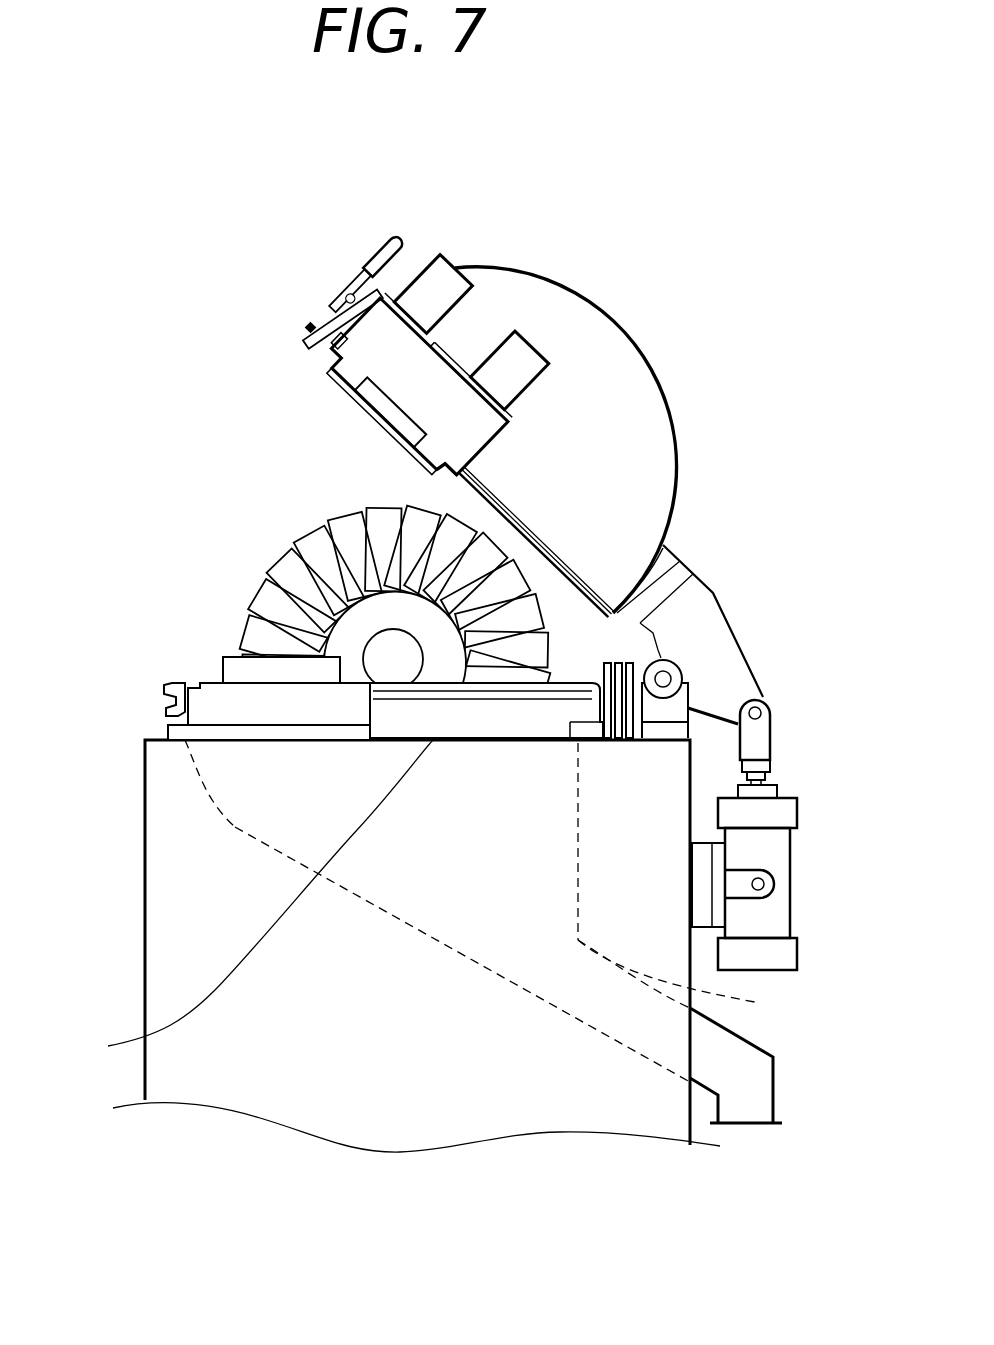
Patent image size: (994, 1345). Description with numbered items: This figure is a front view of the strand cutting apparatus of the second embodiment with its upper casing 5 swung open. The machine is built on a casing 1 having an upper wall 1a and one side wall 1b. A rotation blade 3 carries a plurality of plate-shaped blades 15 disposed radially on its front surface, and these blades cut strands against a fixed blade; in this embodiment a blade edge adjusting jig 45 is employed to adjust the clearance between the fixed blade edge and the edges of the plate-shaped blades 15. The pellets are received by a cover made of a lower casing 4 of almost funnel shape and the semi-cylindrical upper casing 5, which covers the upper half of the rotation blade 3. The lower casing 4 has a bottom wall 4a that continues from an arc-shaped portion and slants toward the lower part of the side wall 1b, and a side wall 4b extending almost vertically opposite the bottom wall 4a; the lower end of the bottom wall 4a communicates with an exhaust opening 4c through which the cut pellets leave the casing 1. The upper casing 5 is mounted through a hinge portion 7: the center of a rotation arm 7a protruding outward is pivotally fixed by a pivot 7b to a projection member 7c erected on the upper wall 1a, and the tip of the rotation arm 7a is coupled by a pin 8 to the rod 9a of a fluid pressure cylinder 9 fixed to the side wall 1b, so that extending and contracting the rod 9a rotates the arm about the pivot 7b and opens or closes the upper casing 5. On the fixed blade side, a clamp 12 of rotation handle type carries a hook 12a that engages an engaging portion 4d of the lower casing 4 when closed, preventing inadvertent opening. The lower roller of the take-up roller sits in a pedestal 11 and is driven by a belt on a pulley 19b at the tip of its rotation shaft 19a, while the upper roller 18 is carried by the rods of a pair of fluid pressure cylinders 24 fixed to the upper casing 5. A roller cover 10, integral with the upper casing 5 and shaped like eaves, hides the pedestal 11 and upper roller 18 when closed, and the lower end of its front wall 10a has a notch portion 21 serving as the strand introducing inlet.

The casing 1 is at (177, 897).
The upper wall 1a is at (277, 891).
The one side wall 1b is at (690, 1053).
The rotation blade 3 is at (366, 585).
The lower casing 4 is at (217, 793).
The bottom wall 4a is at (437, 937).
The side wall 4b is at (687, 850).
The exhaust opening 4c is at (755, 1125).
The engaging portion 4d is at (165, 690).
The upper casing 5 is at (590, 325).
The hinge portion 7 is at (735, 620).
The rotation arm 7a is at (713, 593).
The pivot 7b is at (665, 672).
The projection member 7c is at (738, 668).
The pin 8 is at (768, 705).
The fluid pressure cylinder 9 is at (768, 862).
The rod 9a is at (768, 775).
The roller cover 10 is at (325, 356).
The front wall 10a is at (438, 447).
The pedestal 11 is at (175, 720).
The clamp 12 is at (330, 322).
The hook 12a is at (335, 318).
The plate-shaped blades 15 is at (330, 520).
The upper roller 18 is at (340, 382).
The rotation shaft 19a is at (574, 687).
The pulley 19b is at (680, 780).
The notch portion 21 is at (371, 394).
The fluid pressure cylinders 24 is at (507, 357).
The blade edge adjusting jig 45 is at (235, 657).